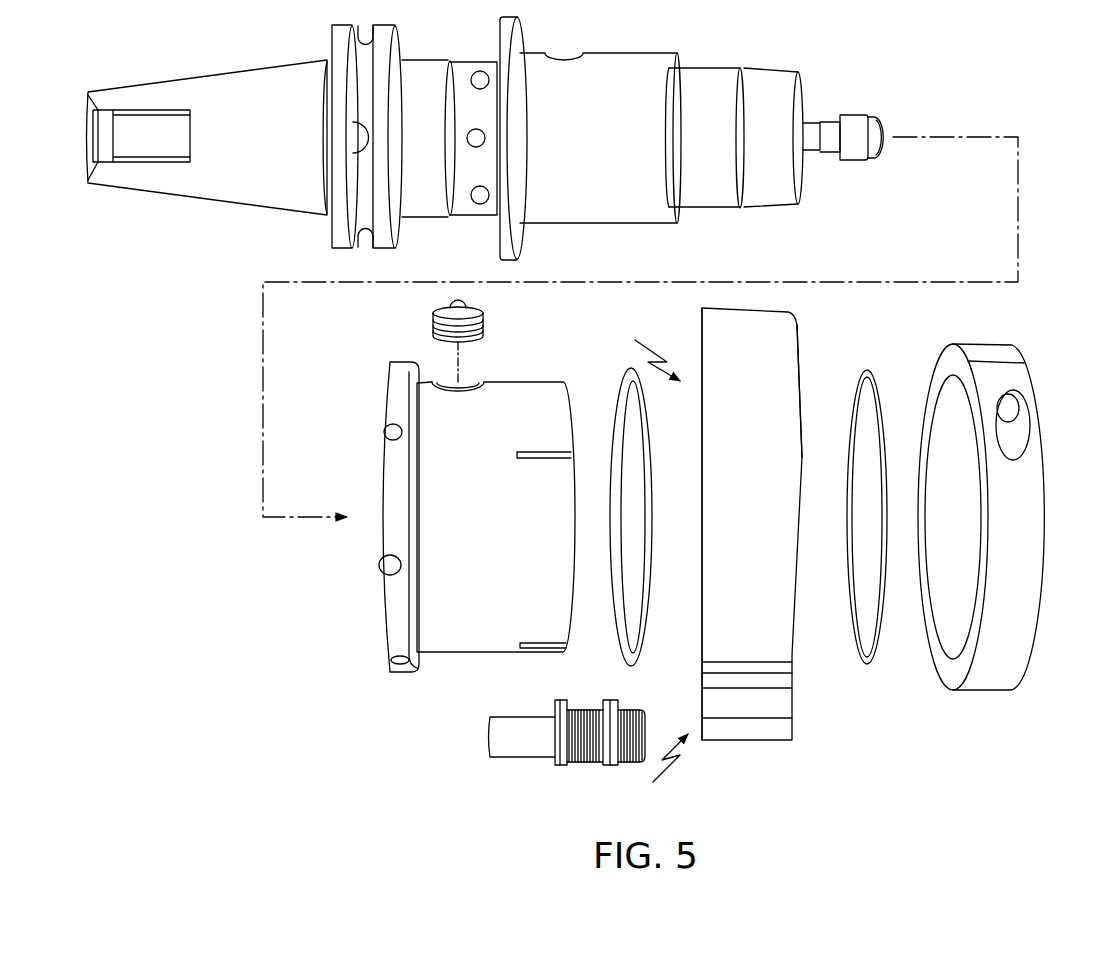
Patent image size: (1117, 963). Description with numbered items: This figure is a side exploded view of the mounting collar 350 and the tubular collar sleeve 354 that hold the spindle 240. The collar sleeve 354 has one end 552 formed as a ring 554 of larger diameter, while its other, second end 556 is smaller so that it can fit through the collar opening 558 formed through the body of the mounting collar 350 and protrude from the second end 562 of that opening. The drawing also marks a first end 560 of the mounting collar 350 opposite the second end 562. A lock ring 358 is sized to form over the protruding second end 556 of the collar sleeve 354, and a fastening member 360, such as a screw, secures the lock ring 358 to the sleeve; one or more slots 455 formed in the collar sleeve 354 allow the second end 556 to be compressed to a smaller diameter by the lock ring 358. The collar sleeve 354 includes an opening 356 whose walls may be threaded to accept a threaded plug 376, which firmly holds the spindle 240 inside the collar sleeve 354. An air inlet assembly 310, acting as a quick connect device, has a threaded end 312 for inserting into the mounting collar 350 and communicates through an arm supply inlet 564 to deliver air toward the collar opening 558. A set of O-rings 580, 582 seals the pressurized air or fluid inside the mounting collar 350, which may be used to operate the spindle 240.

The spindle 240 is at (720, 68).
The air inlet assembly 310 is at (517, 757).
The threaded end 312 is at (575, 762).
The mounting collar 350 is at (772, 307).
The collar sleeve 354 is at (402, 362).
The opening 356 is at (477, 378).
The lock ring 358 is at (988, 343).
The fastening member 360 is at (1047, 425).
The threaded plug 376 is at (483, 325).
The slots 455 is at (545, 457).
The end of the collar sleeve 552 is at (385, 655).
The ring 554 is at (377, 542).
The second end of the collar sleeve 556 is at (572, 417).
The collar opening 558 is at (634, 352).
The first end of housing 560 is at (702, 313).
The second end of the collar opening 562 is at (797, 333).
The arm supply inlet 564 is at (655, 773).
The O-ring 580 is at (646, 536).
The O-ring 582 is at (865, 663).